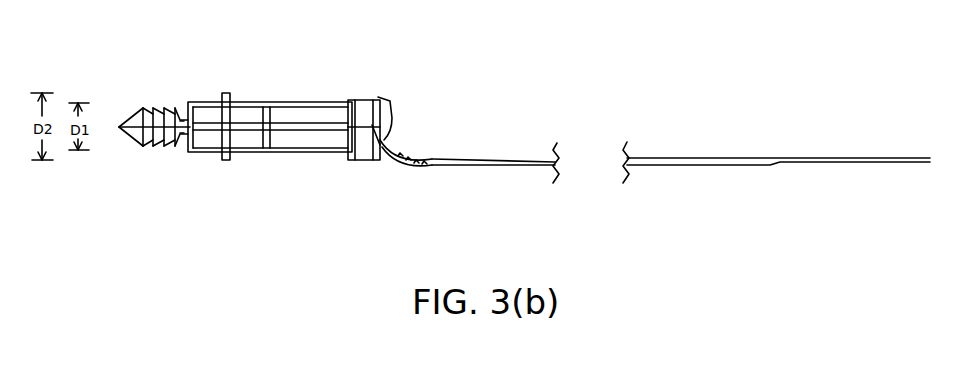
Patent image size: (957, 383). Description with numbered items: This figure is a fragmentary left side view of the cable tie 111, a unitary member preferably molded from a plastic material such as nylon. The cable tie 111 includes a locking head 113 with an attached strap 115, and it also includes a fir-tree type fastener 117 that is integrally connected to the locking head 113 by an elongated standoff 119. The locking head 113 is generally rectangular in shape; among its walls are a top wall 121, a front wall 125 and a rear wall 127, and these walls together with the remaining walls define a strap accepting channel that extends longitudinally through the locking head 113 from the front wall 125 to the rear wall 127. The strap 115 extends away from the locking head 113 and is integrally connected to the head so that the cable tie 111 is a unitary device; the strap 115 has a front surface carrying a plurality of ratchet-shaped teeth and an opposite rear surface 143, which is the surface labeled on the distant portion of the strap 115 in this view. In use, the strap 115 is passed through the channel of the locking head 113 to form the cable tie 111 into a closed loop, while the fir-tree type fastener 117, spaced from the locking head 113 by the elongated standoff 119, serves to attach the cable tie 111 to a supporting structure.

The cable tie 111 is at (275, 242).
The locking head 113 is at (395, 80).
The strap 115 is at (495, 167).
The fir-tree type fastener 117 is at (131, 142).
The elongated standoff 119 is at (285, 152).
The top wall 121 is at (345, 160).
The front wall 125 is at (358, 99).
The rear wall 127 is at (370, 162).
The rear surface 143 is at (733, 166).